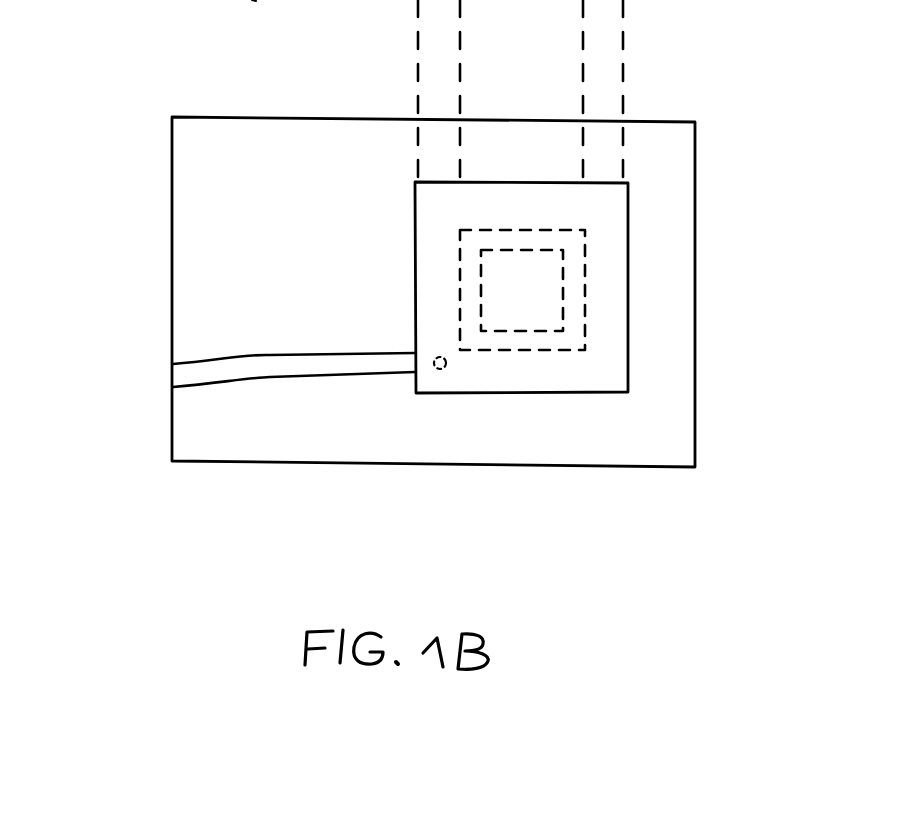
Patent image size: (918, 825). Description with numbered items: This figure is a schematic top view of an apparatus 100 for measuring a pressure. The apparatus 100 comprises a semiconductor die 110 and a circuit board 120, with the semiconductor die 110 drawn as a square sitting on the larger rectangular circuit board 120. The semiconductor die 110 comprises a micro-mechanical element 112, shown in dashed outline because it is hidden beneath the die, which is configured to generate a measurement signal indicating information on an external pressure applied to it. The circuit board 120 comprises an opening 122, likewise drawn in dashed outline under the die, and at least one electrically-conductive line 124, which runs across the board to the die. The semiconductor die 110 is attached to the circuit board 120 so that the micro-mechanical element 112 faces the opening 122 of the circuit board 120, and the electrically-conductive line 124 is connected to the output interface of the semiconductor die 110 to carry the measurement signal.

The apparatus for measuring a pressure 100 is at (128, 101).
The semiconductor die 110 is at (637, 283).
The micro-mechanical element 112 is at (538, 307).
The circuit board 120 is at (165, 263).
The opening 122 is at (482, 340).
The electrically-conductive line 124 is at (190, 373).